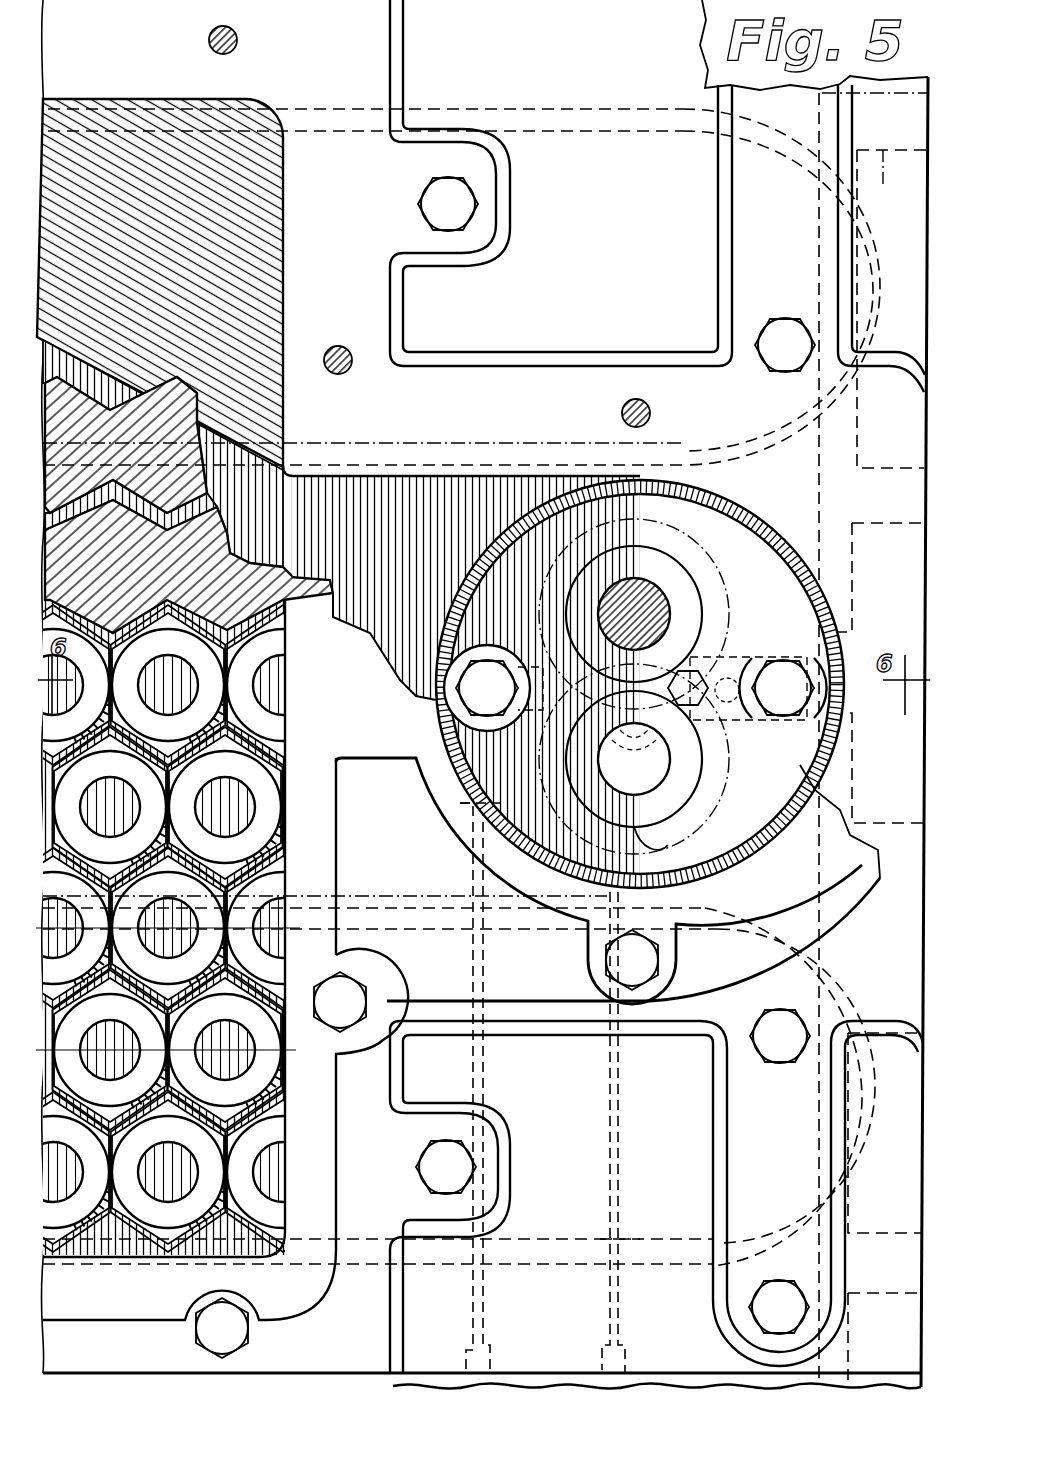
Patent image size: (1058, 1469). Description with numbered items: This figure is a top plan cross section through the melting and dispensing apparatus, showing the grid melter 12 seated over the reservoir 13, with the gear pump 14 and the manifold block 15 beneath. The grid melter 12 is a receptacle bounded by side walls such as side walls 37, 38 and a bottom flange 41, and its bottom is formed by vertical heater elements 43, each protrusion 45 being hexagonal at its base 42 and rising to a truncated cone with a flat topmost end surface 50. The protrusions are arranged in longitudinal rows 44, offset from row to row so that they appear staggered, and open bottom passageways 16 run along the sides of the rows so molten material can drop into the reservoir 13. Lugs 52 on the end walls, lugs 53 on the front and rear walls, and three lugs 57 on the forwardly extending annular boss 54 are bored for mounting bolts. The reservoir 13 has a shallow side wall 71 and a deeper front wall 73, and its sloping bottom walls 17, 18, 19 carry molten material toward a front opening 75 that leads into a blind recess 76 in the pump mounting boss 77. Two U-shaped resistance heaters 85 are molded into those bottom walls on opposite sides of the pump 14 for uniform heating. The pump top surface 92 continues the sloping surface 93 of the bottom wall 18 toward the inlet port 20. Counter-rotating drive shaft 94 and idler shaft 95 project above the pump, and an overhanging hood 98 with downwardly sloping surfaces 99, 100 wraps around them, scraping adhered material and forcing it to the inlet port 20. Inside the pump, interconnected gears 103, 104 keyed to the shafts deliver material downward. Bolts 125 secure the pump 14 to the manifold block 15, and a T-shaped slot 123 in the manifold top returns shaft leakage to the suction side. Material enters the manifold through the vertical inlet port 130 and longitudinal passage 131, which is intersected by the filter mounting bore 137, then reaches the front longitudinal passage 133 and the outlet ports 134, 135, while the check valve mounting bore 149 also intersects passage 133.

The grid melter 12 is at (300, 1125).
The reservoir 13 is at (335, 141).
The gear pump 14 is at (712, 533).
The manifold block 15 is at (393, 1384).
The bottom passageways 16 is at (258, 624).
The sloping bottom wall 17 is at (130, 172).
The bottom wall 18 is at (272, 472).
The bottom wall 19 is at (270, 1117).
The inlet port 20 is at (728, 652).
The side wall 37 is at (84, 1252).
The side wall 38 is at (283, 1213).
The bottom flange 41 is at (181, 1272).
The base 42 is at (180, 432).
The heater elements 43 is at (272, 730).
The longitudinal rows 44 is at (280, 928).
The protrusions 45 is at (255, 808).
The topmost end surfaces 50 is at (236, 1040).
The lugs 52 is at (192, 1330).
The lugs 53 is at (387, 986).
The annular boss 54 is at (560, 918).
The lugs 57 is at (672, 968).
The side wall 71 is at (146, 40).
The front wall 73 is at (275, 370).
The front opening 75 is at (315, 505).
The blind recess 76 is at (648, 480).
The pump mounting boss 77 is at (664, 400).
The U-shaped resistance heaters 85 is at (548, 110).
The top surface 92 is at (556, 476).
The sloping surface 93 is at (440, 478).
The drive shaft 94 is at (668, 588).
The idler shaft 95 is at (667, 806).
The overhanging hood 98 is at (740, 755).
The downwardly sloping surface 99 is at (616, 602).
The downwardly sloping surface 100 is at (640, 838).
The gear 103 is at (726, 614).
The gear 104 is at (722, 797).
The T-shaped slot 123 is at (634, 759).
The bolts 125 is at (635, 688).
The vertical inlet port 130 is at (470, 738).
The longitudinal passage 131 is at (508, 798).
The longitudinal passage 133 is at (866, 1156).
The outlet port 134 is at (898, 1234).
The outlet port 135 is at (873, 739).
The filter mounting bore 137 is at (614, 1234).
The check valve mounting bore 149 is at (866, 630).